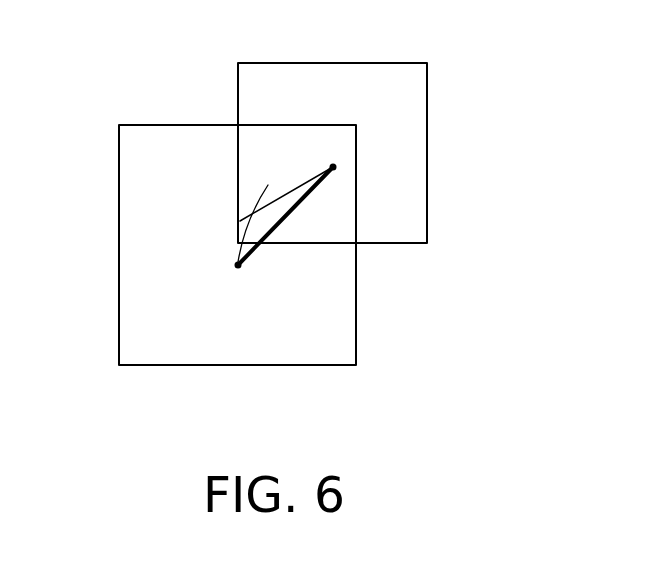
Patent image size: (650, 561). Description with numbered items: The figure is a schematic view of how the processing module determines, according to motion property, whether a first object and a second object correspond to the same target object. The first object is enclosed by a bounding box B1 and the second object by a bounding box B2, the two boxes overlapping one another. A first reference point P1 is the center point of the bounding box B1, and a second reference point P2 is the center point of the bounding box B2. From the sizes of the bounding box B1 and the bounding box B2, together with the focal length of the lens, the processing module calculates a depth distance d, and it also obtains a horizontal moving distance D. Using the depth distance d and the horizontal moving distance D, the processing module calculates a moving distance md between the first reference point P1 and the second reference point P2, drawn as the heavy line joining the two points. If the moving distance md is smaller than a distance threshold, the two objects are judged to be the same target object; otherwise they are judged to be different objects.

The bounding box B1 is at (119, 255).
The bounding box B2 is at (427, 153).
The first reference point P1 is at (238, 265).
The second reference point P2 is at (332, 207).
The horizontal moving distance D is at (333, 167).
The depth distance d is at (238, 265).
The moving distance md is at (238, 265).